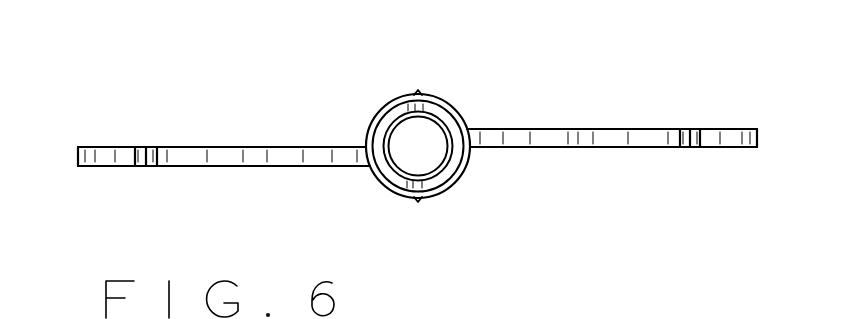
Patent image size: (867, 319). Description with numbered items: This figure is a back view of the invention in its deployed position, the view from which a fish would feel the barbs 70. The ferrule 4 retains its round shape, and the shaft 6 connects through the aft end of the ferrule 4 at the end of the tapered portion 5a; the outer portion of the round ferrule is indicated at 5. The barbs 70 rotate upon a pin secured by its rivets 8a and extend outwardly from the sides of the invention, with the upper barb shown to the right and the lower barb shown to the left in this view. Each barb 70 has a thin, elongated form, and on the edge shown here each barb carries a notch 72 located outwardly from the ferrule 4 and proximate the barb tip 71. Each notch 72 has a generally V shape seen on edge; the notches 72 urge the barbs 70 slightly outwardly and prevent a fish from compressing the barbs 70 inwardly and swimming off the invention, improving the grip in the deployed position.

The ferrule 4 is at (402, 93).
The ring 5 is at (455, 108).
The tapered portion 5a is at (463, 172).
The shaft 6 is at (418, 168).
The rivets 8a is at (418, 92).
The barbs 70 is at (290, 167).
The barb tip 71 is at (78, 153).
The notch 72 is at (146, 147).